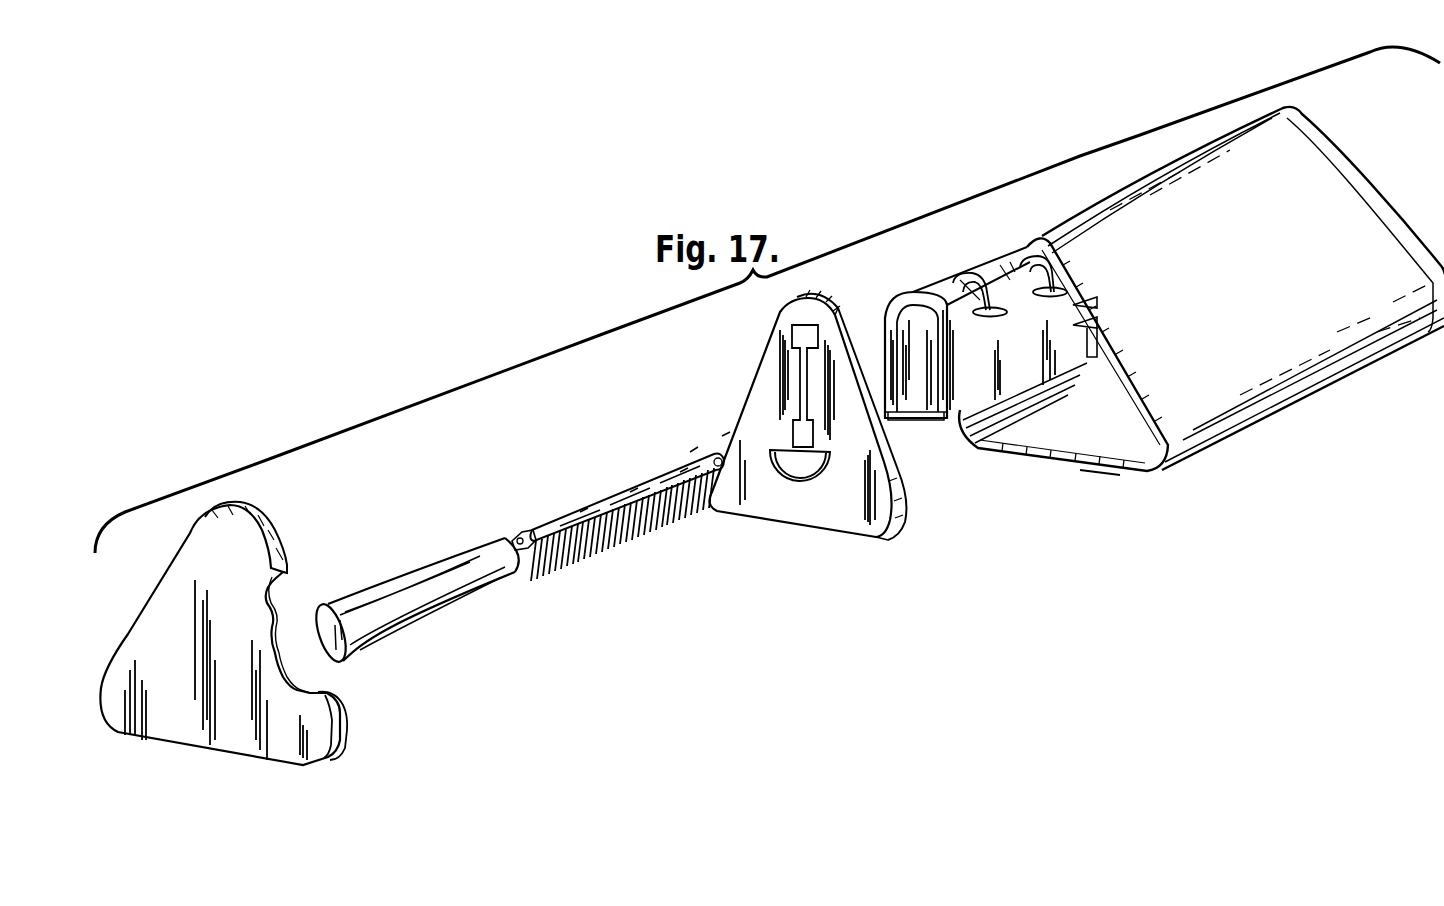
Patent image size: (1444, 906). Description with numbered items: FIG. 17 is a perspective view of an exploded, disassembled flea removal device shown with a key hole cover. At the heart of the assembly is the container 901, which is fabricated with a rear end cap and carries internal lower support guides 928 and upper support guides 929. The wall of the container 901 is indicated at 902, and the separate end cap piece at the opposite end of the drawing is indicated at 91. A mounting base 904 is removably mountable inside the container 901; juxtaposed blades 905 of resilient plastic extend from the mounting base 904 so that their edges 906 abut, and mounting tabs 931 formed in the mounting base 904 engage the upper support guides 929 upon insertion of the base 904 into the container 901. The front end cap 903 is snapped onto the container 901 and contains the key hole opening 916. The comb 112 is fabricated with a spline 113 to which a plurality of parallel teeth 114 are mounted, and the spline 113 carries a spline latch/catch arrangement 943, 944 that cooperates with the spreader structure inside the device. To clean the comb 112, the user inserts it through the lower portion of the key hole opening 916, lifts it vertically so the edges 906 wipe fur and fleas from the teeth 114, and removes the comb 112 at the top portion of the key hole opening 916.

The end cap 91 is at (330, 772).
The comb 112 is at (398, 578).
The spline 113 is at (612, 492).
The teeth 114 is at (633, 525).
The spline latch/catch arrangement 943 is at (530, 530).
The spline latch/catch arrangement 944 is at (727, 440).
The front end cap 903 is at (760, 366).
The key hole opening 916 is at (812, 463).
The edges 906 is at (885, 322).
The blades 905 is at (933, 425).
The mounting base 904 is at (971, 266).
The mounting tabs 931 is at (1040, 297).
The upper support guides 929 is at (1083, 295).
The lower support guides 928 is at (1085, 372).
The container 901 is at (1258, 275).
The casing wall 902 is at (1370, 188).